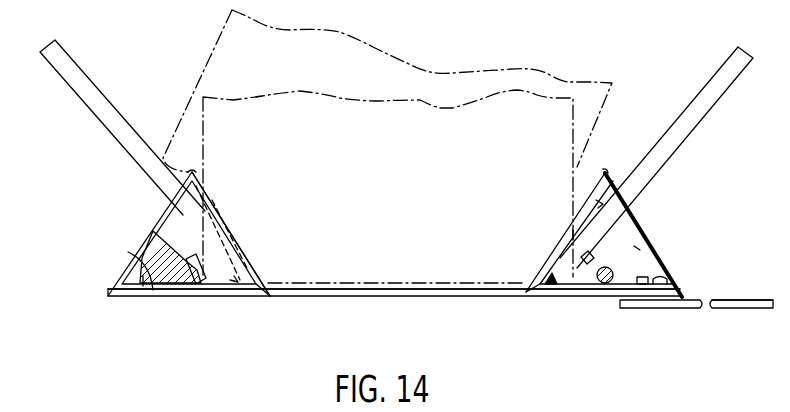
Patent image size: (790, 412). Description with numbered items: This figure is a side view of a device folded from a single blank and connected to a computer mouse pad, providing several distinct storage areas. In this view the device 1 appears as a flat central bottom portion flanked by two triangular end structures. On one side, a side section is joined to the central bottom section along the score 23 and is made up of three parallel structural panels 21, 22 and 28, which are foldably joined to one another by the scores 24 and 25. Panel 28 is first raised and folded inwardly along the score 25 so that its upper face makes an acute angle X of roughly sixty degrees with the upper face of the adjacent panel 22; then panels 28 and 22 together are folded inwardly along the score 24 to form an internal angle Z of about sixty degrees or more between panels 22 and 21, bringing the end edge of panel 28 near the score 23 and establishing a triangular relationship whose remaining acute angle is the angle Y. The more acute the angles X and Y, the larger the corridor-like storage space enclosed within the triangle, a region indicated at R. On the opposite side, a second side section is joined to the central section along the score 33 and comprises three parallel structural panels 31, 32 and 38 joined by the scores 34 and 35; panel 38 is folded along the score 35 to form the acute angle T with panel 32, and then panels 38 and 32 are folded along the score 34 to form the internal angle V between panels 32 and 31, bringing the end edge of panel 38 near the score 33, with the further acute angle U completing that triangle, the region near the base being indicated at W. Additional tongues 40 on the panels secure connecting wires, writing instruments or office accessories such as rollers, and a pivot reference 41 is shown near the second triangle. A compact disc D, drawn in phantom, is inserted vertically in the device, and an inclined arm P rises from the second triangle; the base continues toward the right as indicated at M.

The frame assembly 1 is at (342, 285).
The structural panel 21 is at (158, 216).
The structural panel 22 is at (229, 224).
The score 23 is at (110, 291).
The score 24 is at (160, 155).
The score 25 is at (256, 292).
The structural panel 28 is at (128, 252).
The structural panel 31 is at (640, 218).
The structural panel 32 is at (567, 230).
The score 33 is at (673, 293).
The score 34 is at (602, 165).
The score 35 is at (532, 292).
The structural panel 38 is at (660, 280).
The additional tongues 40 is at (205, 285).
The pivot axis 41 is at (572, 235).
The CD D is at (527, 90).
The arm P is at (703, 88).
The reinforcing gusset R is at (150, 253).
The internal angle Z is at (200, 196).
The angle X is at (228, 283).
The angle Y is at (150, 282).
The internal angle V is at (598, 203).
The point W is at (636, 248).
The angle T is at (558, 286).
The angle U is at (641, 286).
The point M is at (750, 300).